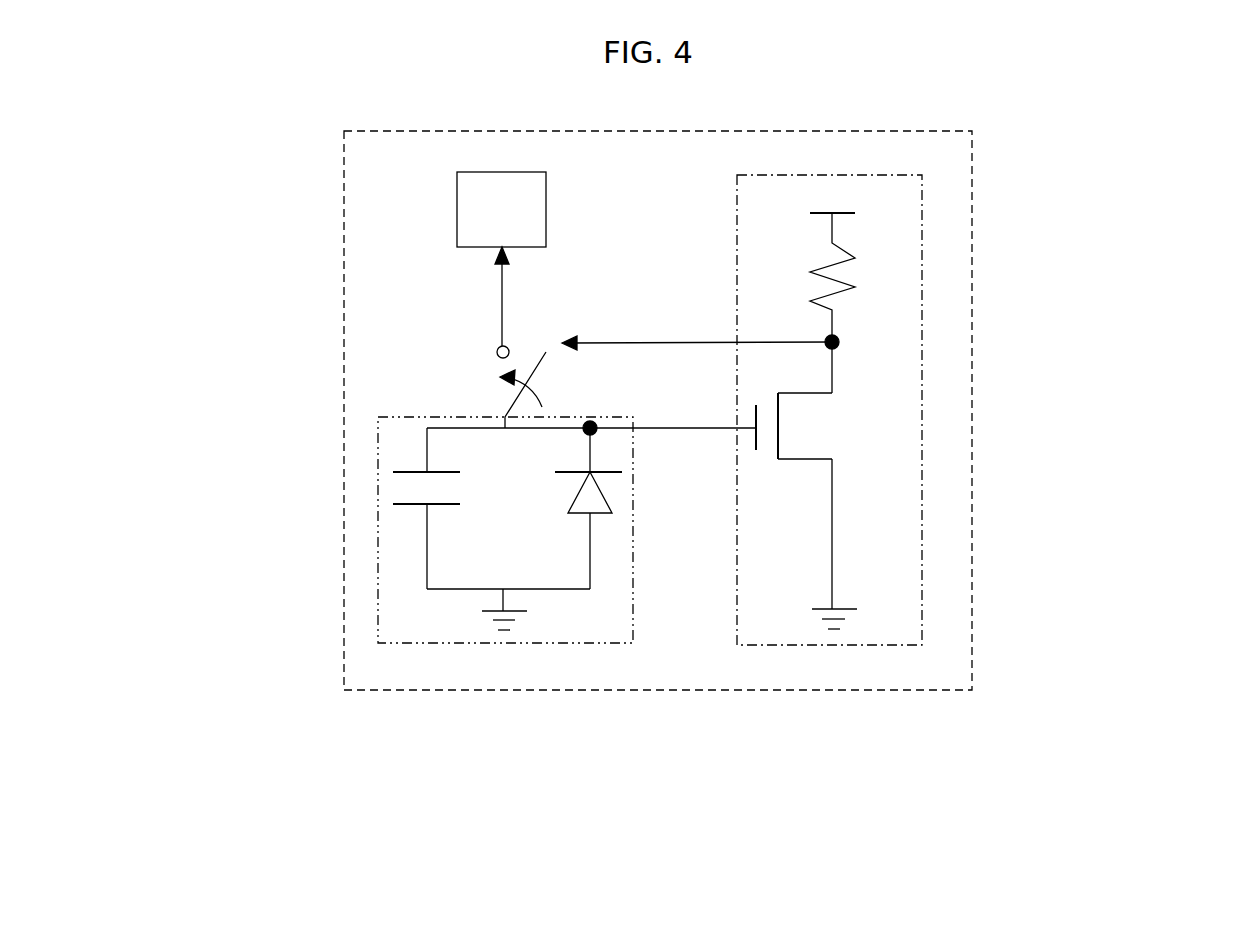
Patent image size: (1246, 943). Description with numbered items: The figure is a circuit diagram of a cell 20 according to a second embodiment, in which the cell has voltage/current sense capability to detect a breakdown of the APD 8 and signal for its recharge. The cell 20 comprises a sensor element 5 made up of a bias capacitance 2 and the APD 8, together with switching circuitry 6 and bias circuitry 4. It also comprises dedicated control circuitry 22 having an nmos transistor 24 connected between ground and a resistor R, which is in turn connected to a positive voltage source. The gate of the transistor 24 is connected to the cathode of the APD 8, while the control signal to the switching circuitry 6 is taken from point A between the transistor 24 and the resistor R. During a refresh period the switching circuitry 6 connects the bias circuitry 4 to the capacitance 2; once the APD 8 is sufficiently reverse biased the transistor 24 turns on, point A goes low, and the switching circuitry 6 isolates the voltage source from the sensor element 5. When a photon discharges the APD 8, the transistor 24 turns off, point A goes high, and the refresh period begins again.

The bias capacitance 2 is at (405, 504).
The bias circuitry 4 is at (457, 208).
The sensor element 5 is at (437, 643).
The switching circuitry 6 is at (470, 378).
The APD 8 is at (607, 502).
The cell 20 is at (558, 688).
The control circuitry 22 is at (922, 283).
The nmos transistor 24 is at (848, 430).